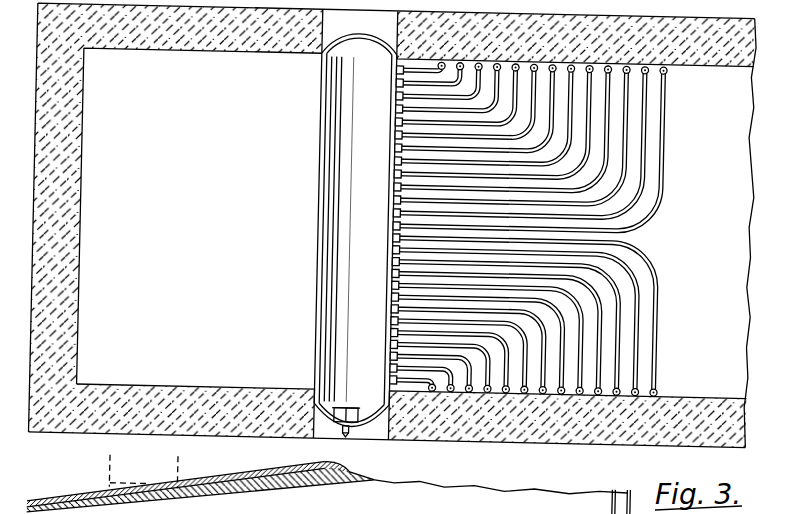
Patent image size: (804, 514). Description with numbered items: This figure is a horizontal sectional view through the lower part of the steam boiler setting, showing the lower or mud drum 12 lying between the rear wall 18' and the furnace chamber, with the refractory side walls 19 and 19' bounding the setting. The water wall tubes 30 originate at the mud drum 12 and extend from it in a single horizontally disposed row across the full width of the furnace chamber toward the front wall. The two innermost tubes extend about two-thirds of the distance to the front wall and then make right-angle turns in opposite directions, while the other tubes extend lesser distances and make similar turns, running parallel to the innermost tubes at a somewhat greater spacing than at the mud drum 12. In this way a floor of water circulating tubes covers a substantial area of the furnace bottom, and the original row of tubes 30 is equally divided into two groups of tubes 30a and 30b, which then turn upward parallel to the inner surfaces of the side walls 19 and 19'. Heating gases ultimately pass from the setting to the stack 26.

The mud drum 12 is at (318, 142).
The rear wall 18' is at (199, 218).
The side wall 19 is at (393, 247).
The side wall 19' is at (392, 225).
The stack 26 is at (187, 470).
The water wall tubes 30 is at (396, 183).
The group of tubes 30a is at (583, 392).
The group of tubes 30b is at (624, 70).